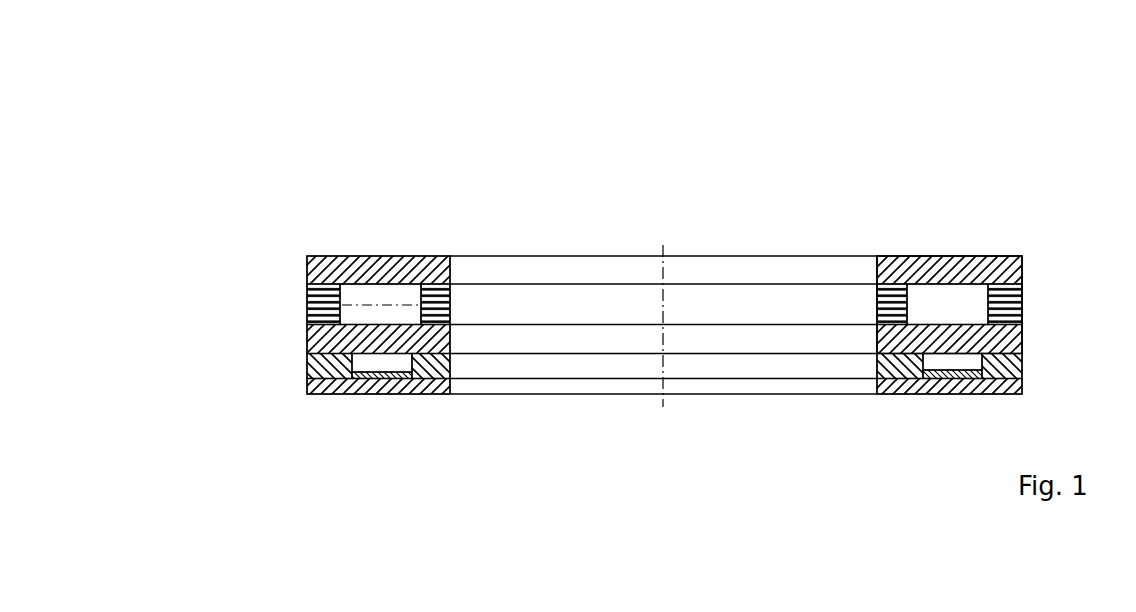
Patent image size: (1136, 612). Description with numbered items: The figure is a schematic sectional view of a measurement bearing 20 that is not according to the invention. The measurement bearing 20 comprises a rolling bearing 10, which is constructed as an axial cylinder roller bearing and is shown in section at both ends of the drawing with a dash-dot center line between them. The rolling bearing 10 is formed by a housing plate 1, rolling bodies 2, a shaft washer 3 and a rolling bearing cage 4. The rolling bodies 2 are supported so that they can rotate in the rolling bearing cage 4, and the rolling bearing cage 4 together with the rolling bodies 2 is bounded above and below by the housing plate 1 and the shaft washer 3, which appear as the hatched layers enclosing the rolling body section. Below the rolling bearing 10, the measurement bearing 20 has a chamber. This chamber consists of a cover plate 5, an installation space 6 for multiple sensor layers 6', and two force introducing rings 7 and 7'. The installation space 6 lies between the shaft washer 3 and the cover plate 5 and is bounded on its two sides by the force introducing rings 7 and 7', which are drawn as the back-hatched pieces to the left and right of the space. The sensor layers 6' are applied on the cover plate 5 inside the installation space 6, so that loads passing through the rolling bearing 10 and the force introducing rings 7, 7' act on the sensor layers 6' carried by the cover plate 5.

The housing plate 1 is at (340, 275).
The rolling bodies 2 is at (350, 308).
The shaft washer 3 is at (323, 333).
The rolling bearing cage 4 is at (443, 293).
The cover plate 5 is at (353, 388).
The installation space 6 is at (369, 451).
The sensor layers 6' is at (933, 462).
The force introducing ring 7 is at (570, 410).
The force introducing ring 7' is at (701, 462).
The rolling bearing 10 is at (1035, 254).
The measurement bearing 20 is at (525, 230).